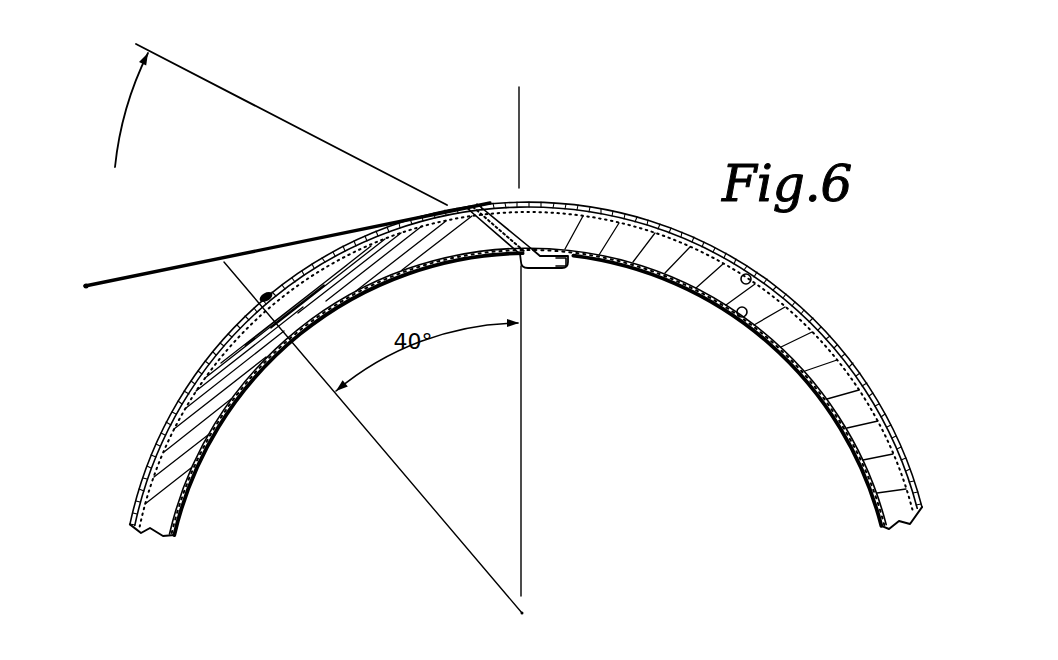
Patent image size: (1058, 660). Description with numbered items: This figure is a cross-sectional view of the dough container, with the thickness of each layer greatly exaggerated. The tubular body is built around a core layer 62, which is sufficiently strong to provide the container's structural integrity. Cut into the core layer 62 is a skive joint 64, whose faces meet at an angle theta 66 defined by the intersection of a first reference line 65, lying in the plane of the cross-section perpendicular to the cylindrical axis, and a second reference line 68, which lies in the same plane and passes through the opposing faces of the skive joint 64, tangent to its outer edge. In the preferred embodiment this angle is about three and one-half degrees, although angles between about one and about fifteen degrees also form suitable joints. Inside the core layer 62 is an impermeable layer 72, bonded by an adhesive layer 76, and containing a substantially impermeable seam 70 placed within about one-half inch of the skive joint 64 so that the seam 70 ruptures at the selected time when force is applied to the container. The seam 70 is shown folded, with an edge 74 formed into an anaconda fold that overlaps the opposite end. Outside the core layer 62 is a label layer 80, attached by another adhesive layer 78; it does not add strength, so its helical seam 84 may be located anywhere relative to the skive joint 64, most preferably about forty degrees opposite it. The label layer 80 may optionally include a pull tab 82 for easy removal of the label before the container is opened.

The core layer 62 is at (900, 507).
The skive joint 64 is at (470, 203).
The first reference line 65 is at (185, 62).
The angle theta 66 is at (117, 276).
The second reference line 68 is at (145, 280).
The impermeable seam 70 is at (532, 268).
The impermeable layer 72 is at (856, 476).
The edge 74 is at (580, 272).
The adhesive layer 76 is at (723, 313).
The adhesive layer 78 is at (758, 283).
The label layer 80 is at (895, 399).
The pull tab 82 is at (270, 298).
The helical seam 84 is at (258, 306).